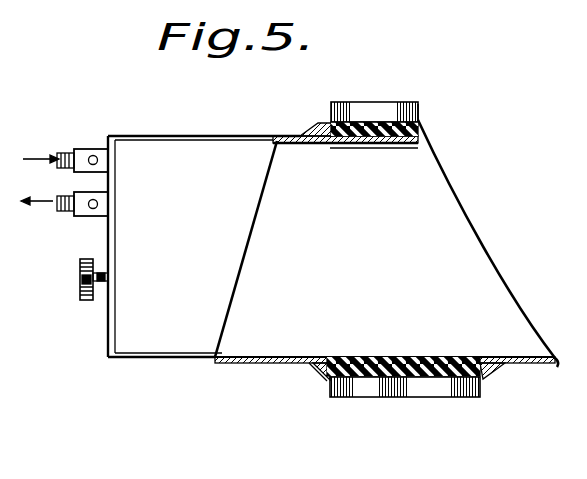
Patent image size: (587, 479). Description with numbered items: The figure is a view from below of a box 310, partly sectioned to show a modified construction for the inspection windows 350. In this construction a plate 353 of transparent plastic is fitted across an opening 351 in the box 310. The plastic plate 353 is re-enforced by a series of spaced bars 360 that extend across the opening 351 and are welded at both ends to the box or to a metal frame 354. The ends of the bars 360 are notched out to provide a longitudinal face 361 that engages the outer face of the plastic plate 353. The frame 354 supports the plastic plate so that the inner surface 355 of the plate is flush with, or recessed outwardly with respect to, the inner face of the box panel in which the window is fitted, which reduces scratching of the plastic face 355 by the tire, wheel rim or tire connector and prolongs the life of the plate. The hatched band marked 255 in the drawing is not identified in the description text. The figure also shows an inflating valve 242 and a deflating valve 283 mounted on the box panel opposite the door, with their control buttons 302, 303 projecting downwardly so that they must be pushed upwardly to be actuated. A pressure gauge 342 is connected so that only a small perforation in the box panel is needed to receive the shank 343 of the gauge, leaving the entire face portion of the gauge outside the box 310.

The inflating valve 242 is at (82, 152).
The control button 302 is at (95, 156).
The deflating valve 283 is at (82, 215).
The control button 303 is at (90, 210).
The pressure gauge 342 is at (80, 286).
The shank 343 is at (100, 284).
The box 310 is at (212, 132).
The metal frame 354 is at (326, 128).
The mounting flange band 255 is at (345, 122).
The inner surface 355 is at (435, 358).
The spaced bars 360 is at (400, 106).
The longitudinal face 361 is at (419, 112).
The plate 353 is at (398, 144).
The opening 351 is at (340, 149).
The inspection window 350 is at (379, 156).